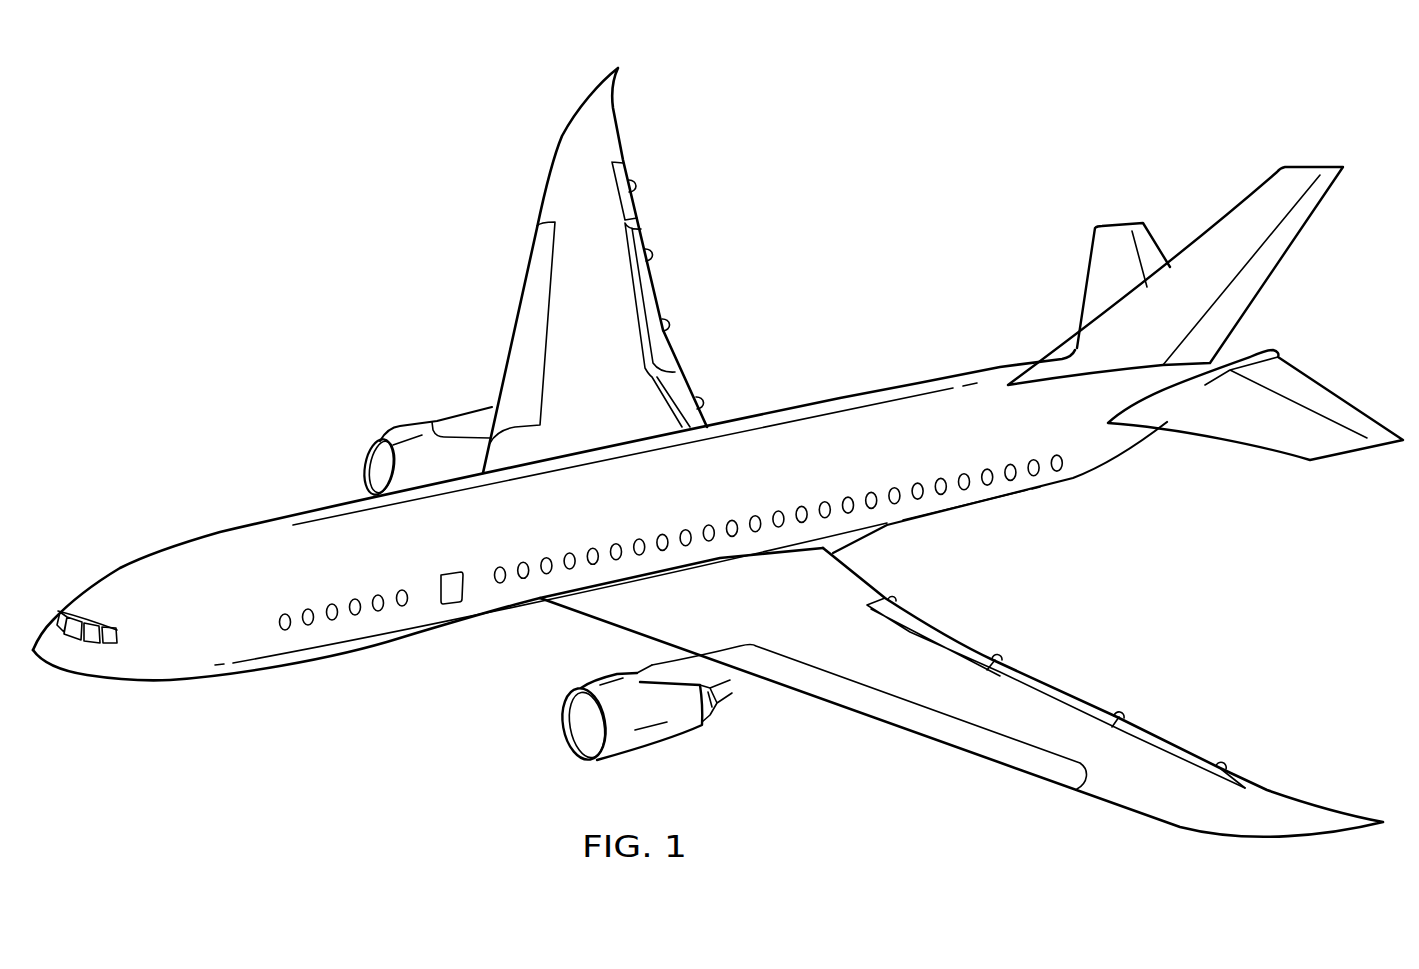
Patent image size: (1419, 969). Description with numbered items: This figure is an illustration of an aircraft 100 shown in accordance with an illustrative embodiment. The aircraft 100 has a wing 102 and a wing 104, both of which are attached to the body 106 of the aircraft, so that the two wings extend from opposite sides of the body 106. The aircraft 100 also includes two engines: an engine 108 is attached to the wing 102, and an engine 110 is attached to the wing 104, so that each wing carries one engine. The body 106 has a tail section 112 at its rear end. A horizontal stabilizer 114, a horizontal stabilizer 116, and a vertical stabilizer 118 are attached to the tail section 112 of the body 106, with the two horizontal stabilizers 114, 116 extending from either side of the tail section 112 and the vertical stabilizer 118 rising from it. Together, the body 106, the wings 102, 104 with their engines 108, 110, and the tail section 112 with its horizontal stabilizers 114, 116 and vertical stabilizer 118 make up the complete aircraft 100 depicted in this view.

The aircraft 100 is at (316, 221).
The wing 102 is at (551, 160).
The wing 104 is at (1262, 835).
The body 106 is at (221, 532).
The engine 108 is at (410, 424).
The engine 110 is at (652, 744).
The tail section 112 is at (1155, 493).
The horizontal stabilizer 114 is at (1084, 290).
The horizontal stabilizer 116 is at (1261, 451).
The vertical stabilizer 118 is at (1284, 258).